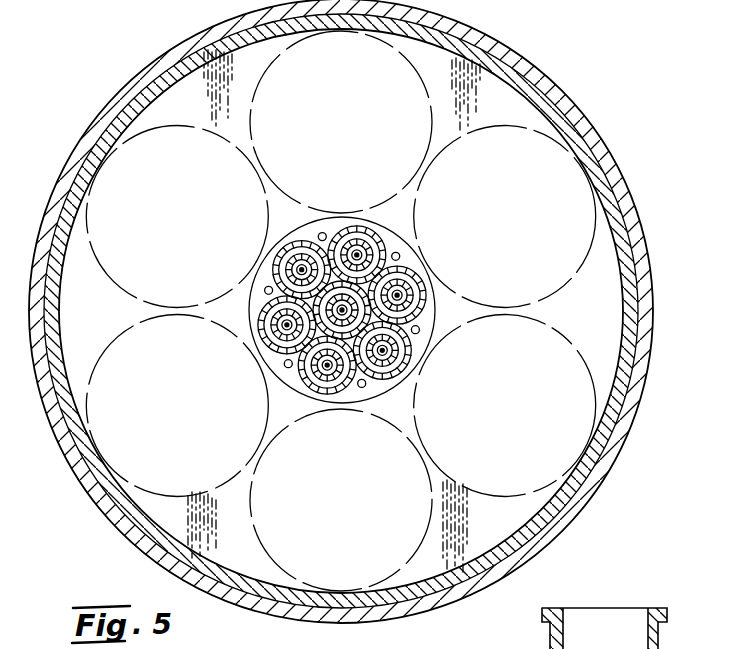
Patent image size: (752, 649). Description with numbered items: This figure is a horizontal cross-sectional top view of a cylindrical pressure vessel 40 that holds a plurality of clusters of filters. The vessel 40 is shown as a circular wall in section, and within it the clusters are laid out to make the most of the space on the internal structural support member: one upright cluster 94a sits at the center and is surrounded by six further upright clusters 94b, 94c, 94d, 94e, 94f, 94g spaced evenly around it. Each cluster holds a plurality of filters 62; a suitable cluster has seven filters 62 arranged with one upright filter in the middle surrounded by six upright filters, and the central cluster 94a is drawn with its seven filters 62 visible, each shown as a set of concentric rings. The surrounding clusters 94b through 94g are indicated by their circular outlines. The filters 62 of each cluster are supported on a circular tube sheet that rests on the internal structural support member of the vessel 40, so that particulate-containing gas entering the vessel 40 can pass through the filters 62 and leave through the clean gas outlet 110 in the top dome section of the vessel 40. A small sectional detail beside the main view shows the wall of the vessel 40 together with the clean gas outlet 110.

The pressure vessel 40 is at (98, 67).
The filter 62 is at (392, 355).
The upright cluster 94a is at (430, 320).
The upright cluster 94b is at (528, 178).
The upright cluster 94c is at (572, 396).
The upright cluster 94d is at (382, 538).
The upright cluster 94e is at (103, 455).
The upright cluster 94f is at (155, 157).
The upright cluster 94g is at (280, 72).
The clean gas outlet 110 is at (616, 622).